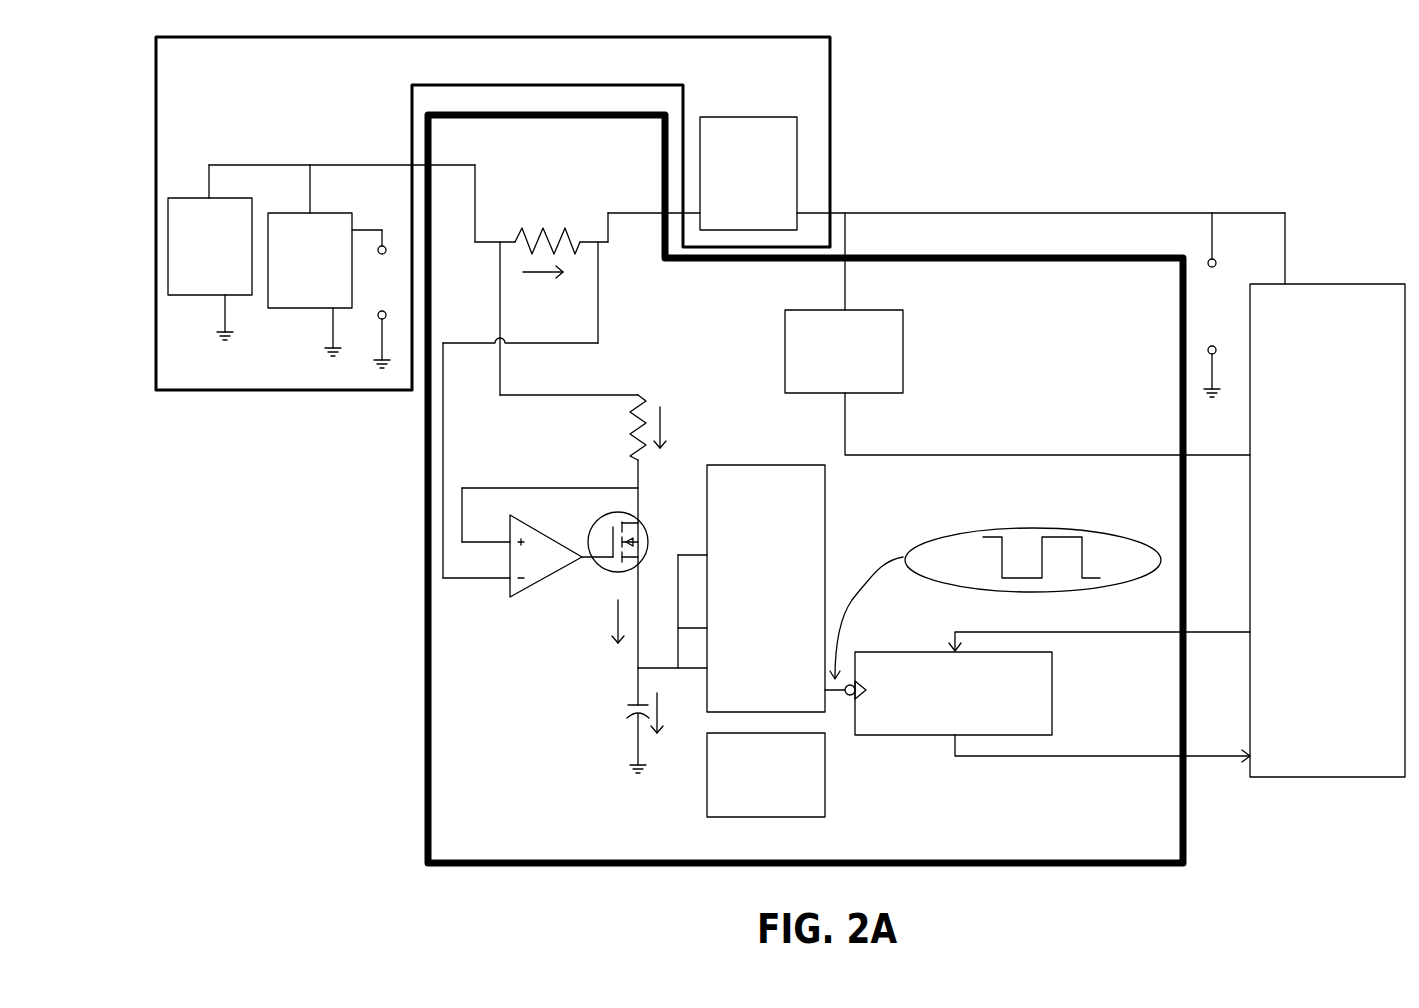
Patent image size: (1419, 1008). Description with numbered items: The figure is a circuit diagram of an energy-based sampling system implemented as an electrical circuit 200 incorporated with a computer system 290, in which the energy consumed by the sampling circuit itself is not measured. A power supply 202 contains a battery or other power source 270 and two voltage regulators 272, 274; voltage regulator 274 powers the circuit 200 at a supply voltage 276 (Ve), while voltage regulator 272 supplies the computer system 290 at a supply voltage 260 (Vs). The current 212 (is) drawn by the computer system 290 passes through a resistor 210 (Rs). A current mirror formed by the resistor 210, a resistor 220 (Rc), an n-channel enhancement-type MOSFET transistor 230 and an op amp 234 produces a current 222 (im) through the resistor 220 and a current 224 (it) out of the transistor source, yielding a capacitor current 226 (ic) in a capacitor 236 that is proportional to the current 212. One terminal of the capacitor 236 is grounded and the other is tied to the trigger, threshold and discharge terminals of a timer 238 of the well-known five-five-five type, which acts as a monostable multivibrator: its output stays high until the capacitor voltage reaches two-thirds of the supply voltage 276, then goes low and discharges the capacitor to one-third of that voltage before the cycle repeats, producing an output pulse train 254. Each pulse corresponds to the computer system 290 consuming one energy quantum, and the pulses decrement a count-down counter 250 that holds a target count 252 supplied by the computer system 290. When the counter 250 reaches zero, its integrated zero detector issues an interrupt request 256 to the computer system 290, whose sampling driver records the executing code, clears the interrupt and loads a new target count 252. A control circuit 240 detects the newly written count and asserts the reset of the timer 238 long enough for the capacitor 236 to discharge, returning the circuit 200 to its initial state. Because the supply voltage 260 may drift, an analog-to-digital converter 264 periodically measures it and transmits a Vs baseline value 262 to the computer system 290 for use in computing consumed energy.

The electrical circuit 200 is at (887, 354).
The power supply 202 is at (257, 107).
The resistor Rs 210 is at (607, 230).
The current is 212 is at (520, 410).
The resistor Rc 220 is at (573, 459).
The current im 222 is at (678, 427).
The current it 224 is at (602, 621).
The capacitor current ic 226 is at (675, 713).
The MOSFET transistor 230 is at (608, 520).
The op amp 234 is at (541, 574).
The capacitor 236 is at (630, 707).
The 555 timer 238 is at (764, 518).
The control circuit 240 is at (754, 792).
The count-down counter 250 is at (941, 708).
The target count 252 is at (1099, 633).
The output pulse train 254 is at (1103, 518).
The interrupt request signal 256 is at (1102, 739).
The supply voltage Vs 260 is at (1041, 305).
The Vs baseline value 262 is at (1047, 424).
The analog-to-digital converter 264 is at (833, 385).
The battery or other power source 270 is at (199, 280).
The voltage regulator 272 is at (737, 206).
The voltage regulator 274 is at (299, 291).
The supply voltage Ve 276 is at (372, 299).
The computer system 290 is at (1315, 556).